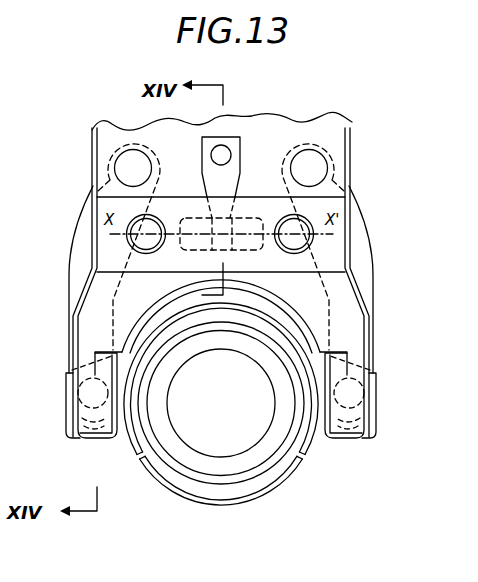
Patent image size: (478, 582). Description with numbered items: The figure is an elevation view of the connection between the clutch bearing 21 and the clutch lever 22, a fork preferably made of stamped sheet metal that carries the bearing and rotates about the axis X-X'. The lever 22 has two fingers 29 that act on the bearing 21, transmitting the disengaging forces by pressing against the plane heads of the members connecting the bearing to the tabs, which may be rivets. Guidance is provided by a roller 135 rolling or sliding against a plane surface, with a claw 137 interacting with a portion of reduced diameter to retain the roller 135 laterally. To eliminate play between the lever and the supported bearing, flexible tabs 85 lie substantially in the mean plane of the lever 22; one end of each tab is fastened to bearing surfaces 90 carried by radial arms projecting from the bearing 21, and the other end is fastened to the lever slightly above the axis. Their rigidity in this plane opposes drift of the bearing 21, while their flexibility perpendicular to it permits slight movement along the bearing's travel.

The clutch bearing 21 is at (287, 489).
The clutch lever 22 is at (356, 120).
The fingers 29 is at (70, 443).
The flexible tabs 85 is at (82, 222).
The bearing surfaces 90 is at (118, 449).
The roller 135 is at (251, 217).
The claw 137 is at (236, 165).